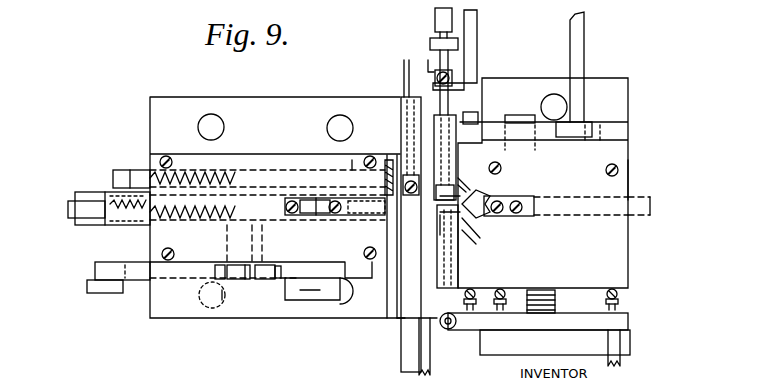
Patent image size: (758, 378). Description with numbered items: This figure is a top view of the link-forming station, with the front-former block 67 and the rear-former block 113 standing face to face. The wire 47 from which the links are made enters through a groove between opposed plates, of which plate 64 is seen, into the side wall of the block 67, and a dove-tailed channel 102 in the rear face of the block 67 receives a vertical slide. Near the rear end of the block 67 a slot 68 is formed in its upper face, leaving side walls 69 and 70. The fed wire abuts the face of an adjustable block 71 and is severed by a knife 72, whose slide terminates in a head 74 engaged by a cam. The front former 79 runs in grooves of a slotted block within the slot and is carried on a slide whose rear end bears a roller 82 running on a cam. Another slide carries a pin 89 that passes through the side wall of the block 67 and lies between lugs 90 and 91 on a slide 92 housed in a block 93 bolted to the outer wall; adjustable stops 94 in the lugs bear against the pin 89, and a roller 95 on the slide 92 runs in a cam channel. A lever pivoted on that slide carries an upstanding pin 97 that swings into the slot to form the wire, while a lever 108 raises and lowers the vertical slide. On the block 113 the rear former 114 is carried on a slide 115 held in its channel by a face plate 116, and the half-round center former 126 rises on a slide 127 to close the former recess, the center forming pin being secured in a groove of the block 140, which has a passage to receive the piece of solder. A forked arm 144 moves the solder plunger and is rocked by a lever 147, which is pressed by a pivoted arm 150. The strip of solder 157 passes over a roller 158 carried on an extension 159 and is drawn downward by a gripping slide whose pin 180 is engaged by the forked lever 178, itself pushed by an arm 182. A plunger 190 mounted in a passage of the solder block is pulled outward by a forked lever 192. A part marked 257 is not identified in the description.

The wire 47 is at (413, 60).
The plate 64 is at (405, 90).
The block 67 is at (293, 117).
The slot 68 is at (316, 190).
The side wall 69 is at (352, 160).
The side wall 70 is at (312, 280).
The block 71 is at (398, 252).
The knife 72 is at (405, 100).
The head 74 is at (128, 180).
The front former 79 is at (352, 212).
The roller 82 is at (70, 209).
The pin 89 is at (262, 280).
The lug 90 is at (290, 280).
The lug 91 is at (248, 280).
The slide 92 is at (138, 284).
The block 93 is at (190, 298).
The adjustable stop 94 is at (222, 290).
The roller 95 is at (106, 292).
The upstanding pin 97 is at (402, 318).
The dove-tailed channel 102 is at (440, 82).
The lever 108 is at (423, 352).
The block 113 is at (600, 147).
The rear former 114 is at (520, 194).
The slide 115 is at (634, 226).
The face plate 116 is at (620, 190).
The center former 126 is at (442, 228).
The slide 127 is at (486, 220).
The block 140 is at (447, 246).
The arm 144 is at (447, 330).
The lever 147 is at (490, 346).
The arm 150 is at (616, 342).
The strip of solder 157 is at (490, 100).
The roller 158 is at (482, 192).
The extension 159 is at (461, 178).
The lever 178 is at (547, 112).
The pin 180 is at (493, 128).
The arm 182 is at (581, 40).
The plunger 190 is at (448, 58).
The lever 192 is at (470, 24).
The pin 257 is at (455, 208).